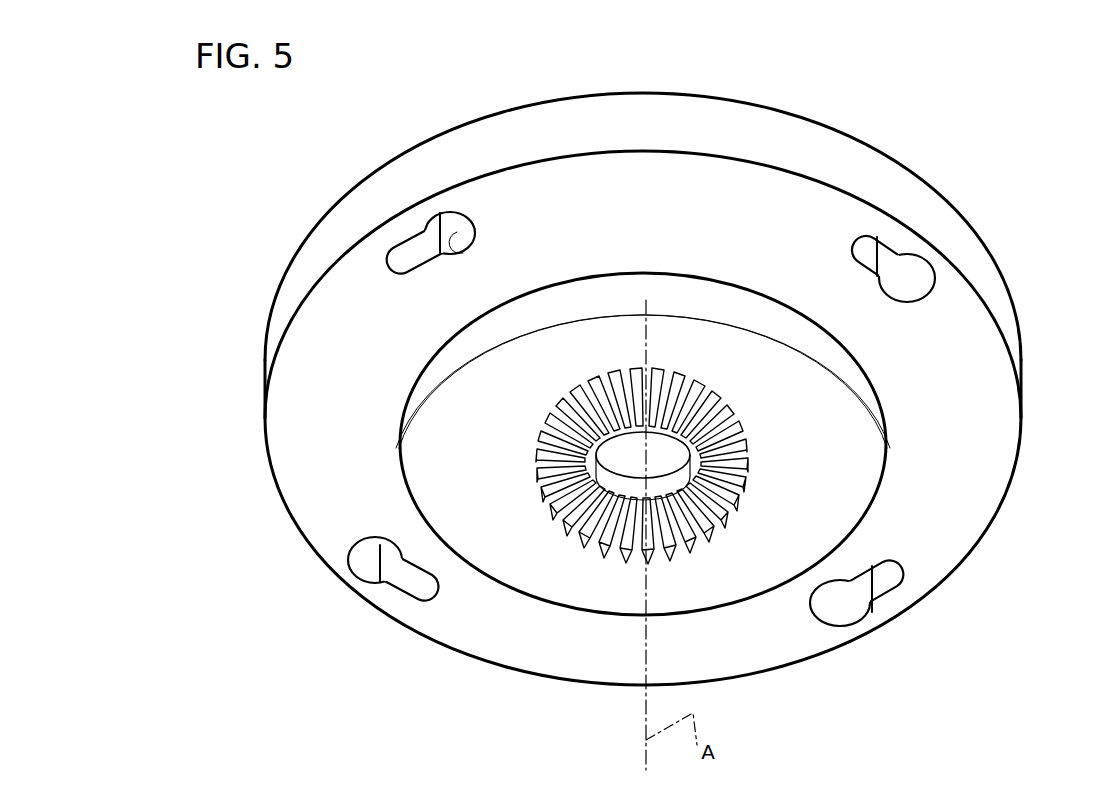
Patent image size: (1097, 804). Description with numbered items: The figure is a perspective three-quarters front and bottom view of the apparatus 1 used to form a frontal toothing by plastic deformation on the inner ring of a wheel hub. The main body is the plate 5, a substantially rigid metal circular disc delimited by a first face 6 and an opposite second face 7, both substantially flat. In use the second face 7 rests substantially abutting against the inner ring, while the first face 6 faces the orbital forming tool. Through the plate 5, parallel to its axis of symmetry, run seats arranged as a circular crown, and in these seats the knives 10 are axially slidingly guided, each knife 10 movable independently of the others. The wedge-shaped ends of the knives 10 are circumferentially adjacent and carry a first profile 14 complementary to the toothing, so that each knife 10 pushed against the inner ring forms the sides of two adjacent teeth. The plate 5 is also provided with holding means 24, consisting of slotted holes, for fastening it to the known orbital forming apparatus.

The apparatus 1 is at (668, 413).
The plate 5 is at (1002, 435).
The first face 6 is at (985, 227).
The second face 7 is at (758, 643).
The knives 10 is at (636, 463).
The first profile 14 is at (554, 524).
The holding means 24 is at (467, 258).